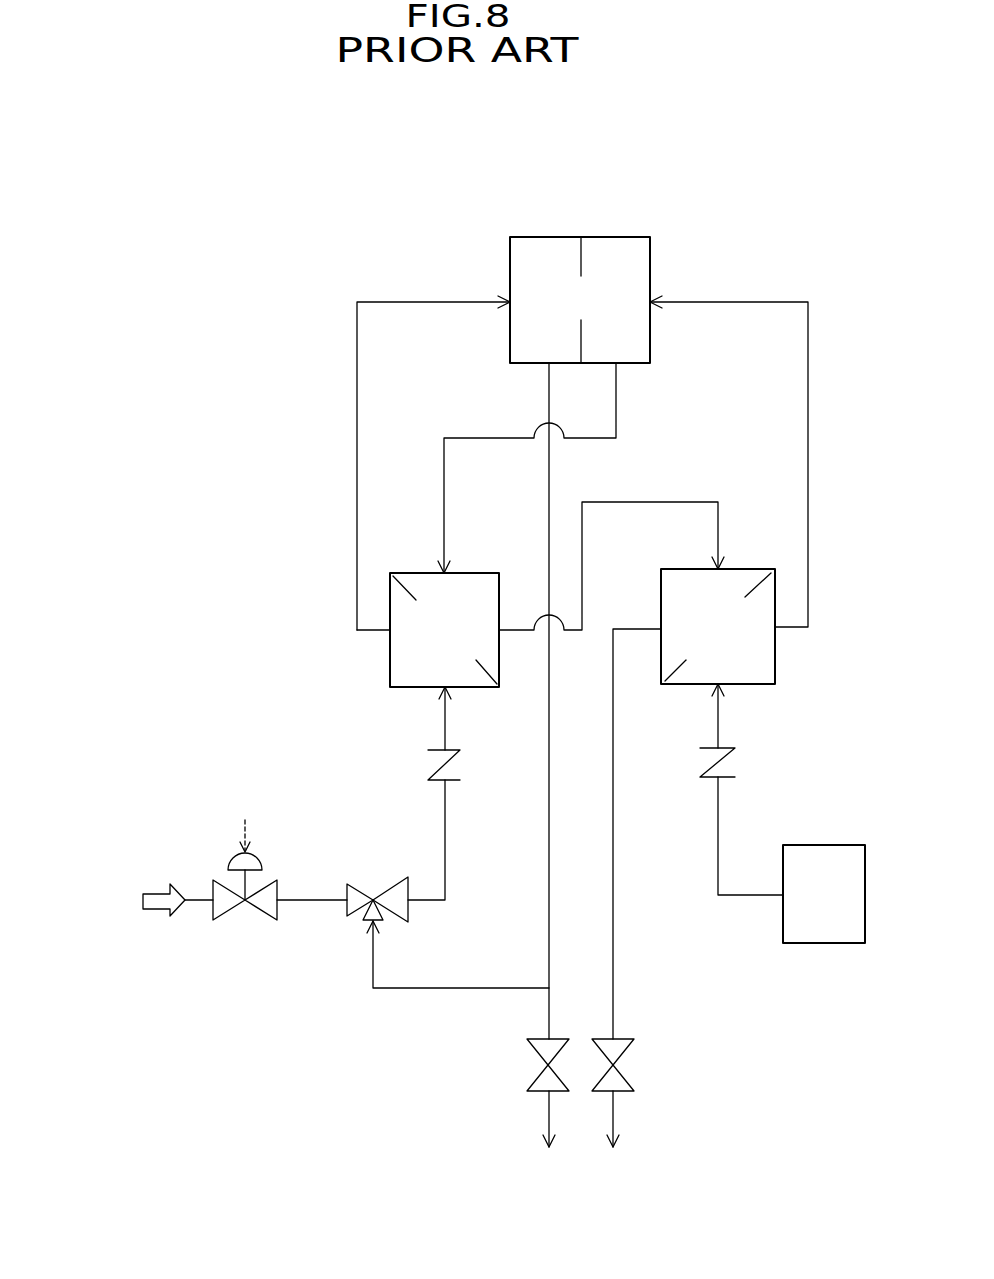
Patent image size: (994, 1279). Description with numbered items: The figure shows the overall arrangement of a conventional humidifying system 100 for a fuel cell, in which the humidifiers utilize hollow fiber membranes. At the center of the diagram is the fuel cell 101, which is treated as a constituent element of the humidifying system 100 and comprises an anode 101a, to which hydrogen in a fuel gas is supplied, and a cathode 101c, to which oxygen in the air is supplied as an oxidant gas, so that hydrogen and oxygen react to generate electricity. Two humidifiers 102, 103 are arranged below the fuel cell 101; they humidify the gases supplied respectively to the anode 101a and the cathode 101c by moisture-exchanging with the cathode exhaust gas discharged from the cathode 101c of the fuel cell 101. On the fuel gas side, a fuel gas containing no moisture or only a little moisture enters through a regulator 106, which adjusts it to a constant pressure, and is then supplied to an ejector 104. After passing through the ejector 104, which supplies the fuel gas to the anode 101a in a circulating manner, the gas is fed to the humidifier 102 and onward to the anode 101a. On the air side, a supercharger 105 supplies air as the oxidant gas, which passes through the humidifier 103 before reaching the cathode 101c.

The humidifying system 100 is at (243, 428).
The fuel cell 101 is at (622, 225).
The anode 101a is at (524, 262).
The cathode 101c is at (640, 256).
The humidifier 102 is at (390, 655).
The humidifier 103 is at (775, 652).
The ejector 104 is at (373, 885).
The supercharger 105 is at (830, 845).
The regulator 106 is at (228, 856).